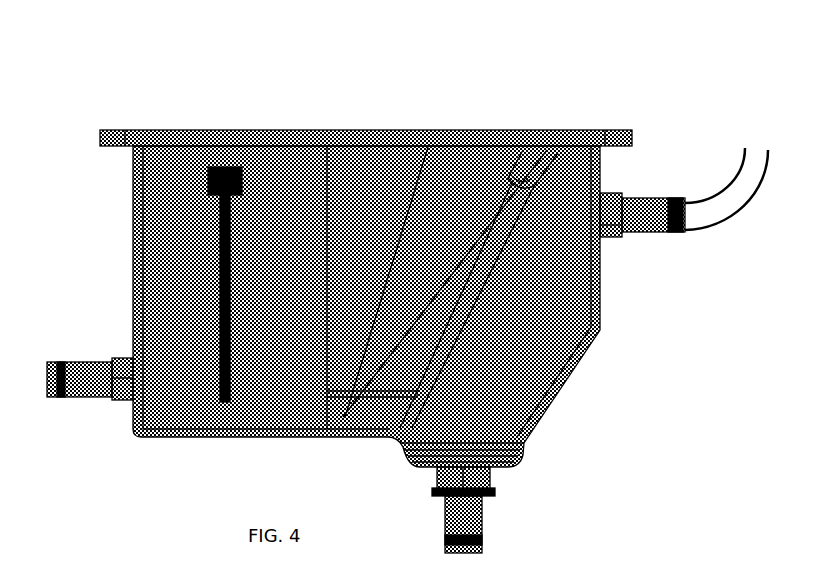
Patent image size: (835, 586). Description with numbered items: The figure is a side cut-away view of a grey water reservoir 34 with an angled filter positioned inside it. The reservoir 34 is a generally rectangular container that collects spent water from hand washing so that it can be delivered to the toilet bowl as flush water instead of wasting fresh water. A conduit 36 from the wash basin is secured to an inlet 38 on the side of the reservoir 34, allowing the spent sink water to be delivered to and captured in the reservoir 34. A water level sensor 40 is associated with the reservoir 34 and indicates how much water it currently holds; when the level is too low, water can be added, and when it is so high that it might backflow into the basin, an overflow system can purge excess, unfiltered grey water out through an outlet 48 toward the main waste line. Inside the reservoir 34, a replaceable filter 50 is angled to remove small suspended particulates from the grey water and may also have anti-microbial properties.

The grey water reservoir 34 is at (467, 74).
The conduit 36 is at (745, 172).
The inlet 38 is at (678, 248).
The water level sensor 40 is at (212, 247).
The outlet 48 is at (483, 521).
The filter 50 is at (455, 281).